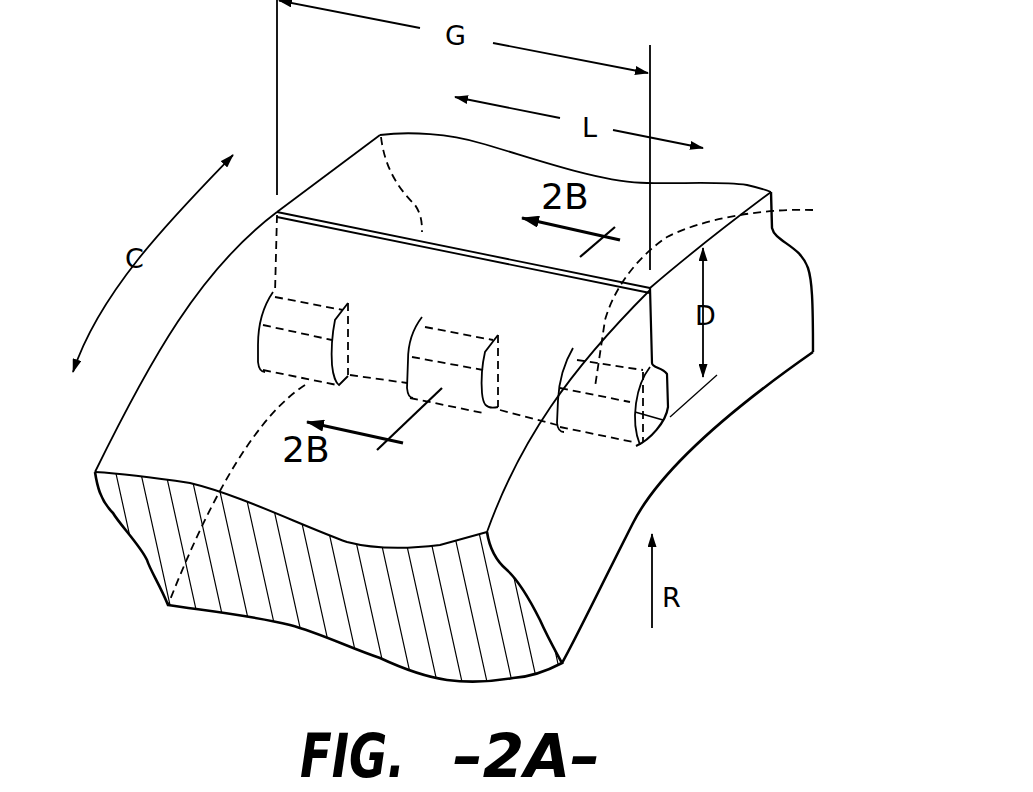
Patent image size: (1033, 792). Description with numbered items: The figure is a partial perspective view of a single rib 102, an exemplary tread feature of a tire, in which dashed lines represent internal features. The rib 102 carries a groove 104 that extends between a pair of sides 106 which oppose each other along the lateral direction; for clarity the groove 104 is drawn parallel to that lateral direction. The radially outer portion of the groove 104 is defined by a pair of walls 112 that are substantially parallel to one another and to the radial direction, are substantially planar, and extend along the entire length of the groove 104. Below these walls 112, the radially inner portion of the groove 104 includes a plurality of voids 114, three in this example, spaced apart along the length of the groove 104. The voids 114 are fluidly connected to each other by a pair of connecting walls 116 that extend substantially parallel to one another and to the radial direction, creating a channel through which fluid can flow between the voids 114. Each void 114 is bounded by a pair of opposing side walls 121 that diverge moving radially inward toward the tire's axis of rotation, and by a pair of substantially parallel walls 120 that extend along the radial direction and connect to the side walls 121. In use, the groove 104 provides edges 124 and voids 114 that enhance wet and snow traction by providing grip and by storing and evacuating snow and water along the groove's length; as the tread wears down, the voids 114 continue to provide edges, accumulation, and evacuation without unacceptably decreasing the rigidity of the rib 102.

The rib 102 is at (208, 124).
The groove 104 is at (618, 260).
The sides 106 is at (118, 417).
The walls 112 is at (527, 295).
The void 114 is at (461, 337).
The connecting walls 116 is at (390, 353).
The walls 120 is at (285, 355).
The side walls 121 is at (233, 213).
The edges 124 is at (332, 222).